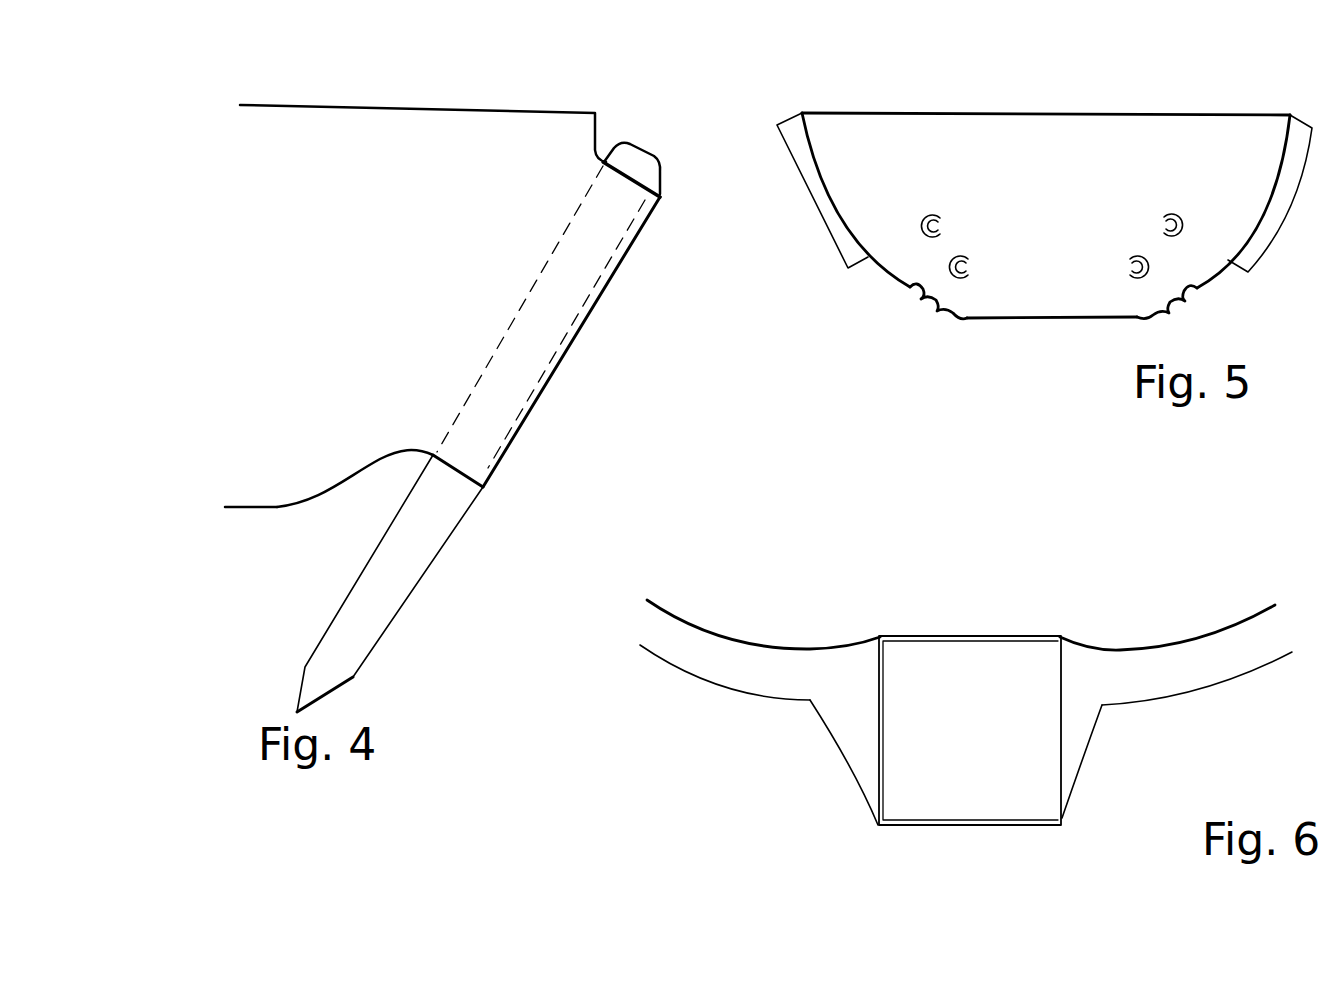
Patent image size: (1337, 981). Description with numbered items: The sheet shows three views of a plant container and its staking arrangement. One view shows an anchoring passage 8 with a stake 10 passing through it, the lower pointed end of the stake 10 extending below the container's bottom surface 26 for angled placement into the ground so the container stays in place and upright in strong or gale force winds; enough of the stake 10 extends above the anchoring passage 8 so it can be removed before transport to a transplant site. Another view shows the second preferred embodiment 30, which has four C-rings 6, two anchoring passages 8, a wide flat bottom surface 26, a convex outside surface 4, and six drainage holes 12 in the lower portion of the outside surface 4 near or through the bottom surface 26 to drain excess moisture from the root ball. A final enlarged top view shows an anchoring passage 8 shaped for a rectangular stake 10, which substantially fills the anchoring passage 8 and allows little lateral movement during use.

In FIG. 4, the convex outside surface 4 is at (337, 473).
In FIG. 5, the convex outside surface 4 is at (1218, 128).
In FIG. 6, the convex outside surface 4 is at (1227, 667).
In FIG. 5, the C-rings 6 is at (988, 236).
In FIG. 4, the anchoring passage 8 is at (593, 297).
In FIG. 5, the anchoring passage 8 is at (853, 248).
In FIG. 6, the anchoring passage 8 is at (845, 730).
In FIG. 4, the stake 10 is at (425, 547).
In FIG. 6, the stake 10 is at (947, 655).
In FIG. 5, the drainage holes 12 is at (961, 341).
In FIG. 4, the bottom surface 26 is at (240, 525).
In FIG. 5, the bottom surface 26 is at (1053, 336).
In FIG. 5, the second preferred embodiment 30 is at (874, 50).